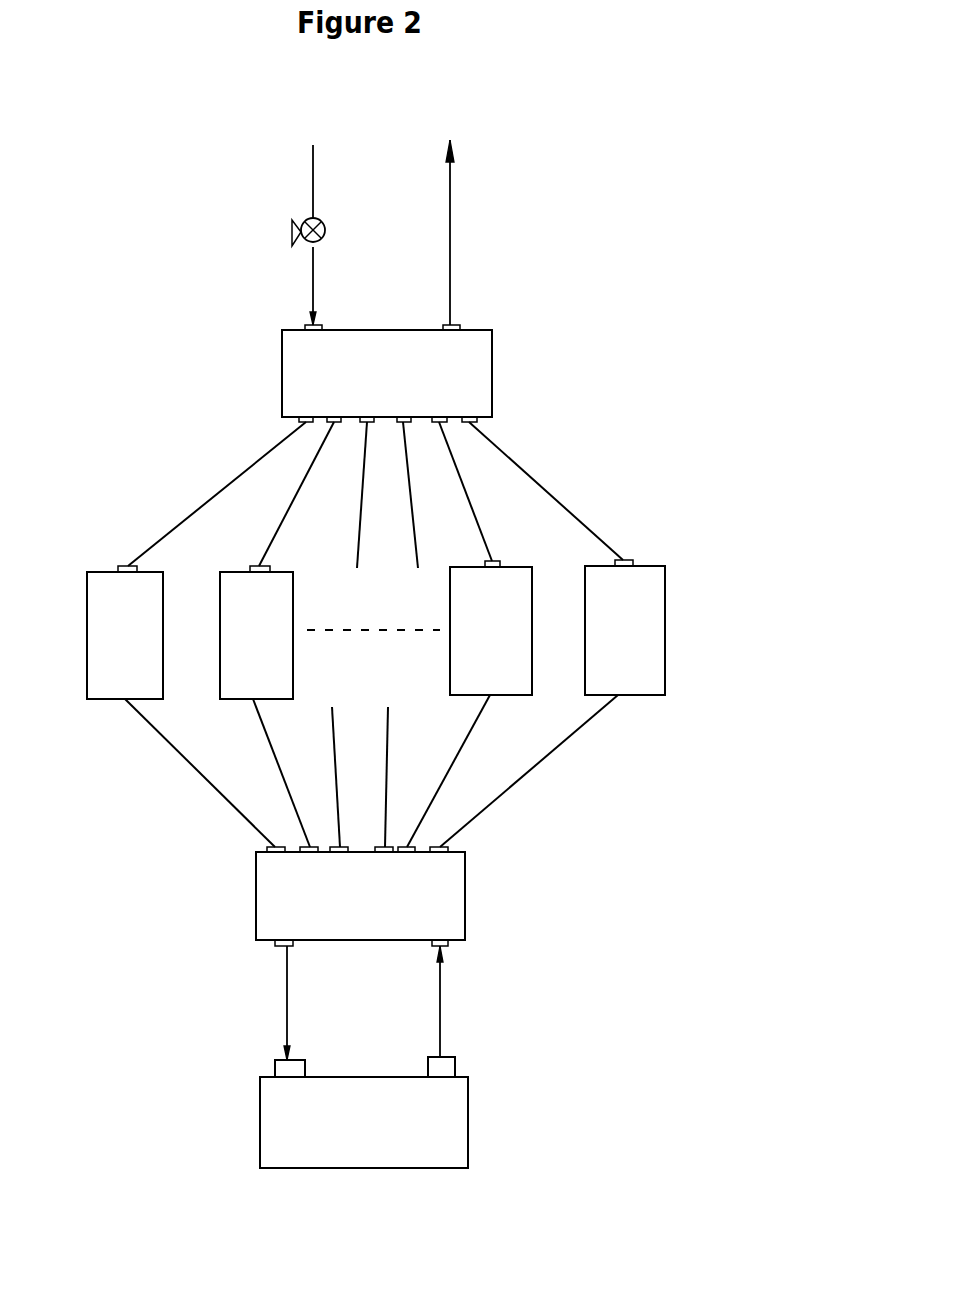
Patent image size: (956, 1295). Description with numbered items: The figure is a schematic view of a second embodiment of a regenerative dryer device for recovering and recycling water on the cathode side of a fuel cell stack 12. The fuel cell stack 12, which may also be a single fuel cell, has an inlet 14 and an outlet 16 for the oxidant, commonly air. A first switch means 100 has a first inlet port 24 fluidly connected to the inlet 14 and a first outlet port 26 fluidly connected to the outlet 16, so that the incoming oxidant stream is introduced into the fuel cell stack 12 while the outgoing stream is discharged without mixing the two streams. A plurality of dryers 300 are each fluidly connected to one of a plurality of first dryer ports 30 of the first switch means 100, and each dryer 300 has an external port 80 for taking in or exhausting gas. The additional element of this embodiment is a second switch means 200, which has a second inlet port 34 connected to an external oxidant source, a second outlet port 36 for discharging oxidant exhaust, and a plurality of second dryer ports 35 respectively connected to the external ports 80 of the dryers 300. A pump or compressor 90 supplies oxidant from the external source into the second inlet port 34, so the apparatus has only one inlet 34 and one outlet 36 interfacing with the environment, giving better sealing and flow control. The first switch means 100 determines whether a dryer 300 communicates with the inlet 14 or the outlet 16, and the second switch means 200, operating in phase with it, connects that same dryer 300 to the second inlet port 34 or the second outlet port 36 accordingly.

The fuel cell stack 12 is at (364, 1122).
The inlet 14 is at (283, 1067).
The outlet 16 is at (450, 1063).
The first inlet port 24 is at (277, 943).
The first outlet port 26 is at (447, 945).
The first dryer ports 30 is at (268, 848).
The second inlet port 34 is at (310, 328).
The second dryer ports 35 is at (280, 420).
The second outlet port 36 is at (457, 322).
The external port 80 is at (123, 567).
The pump or compressor 90 is at (293, 240).
The first switch means 100 is at (360, 896).
The second switch means 200 is at (387, 373).
The dryers 300 is at (673, 612).